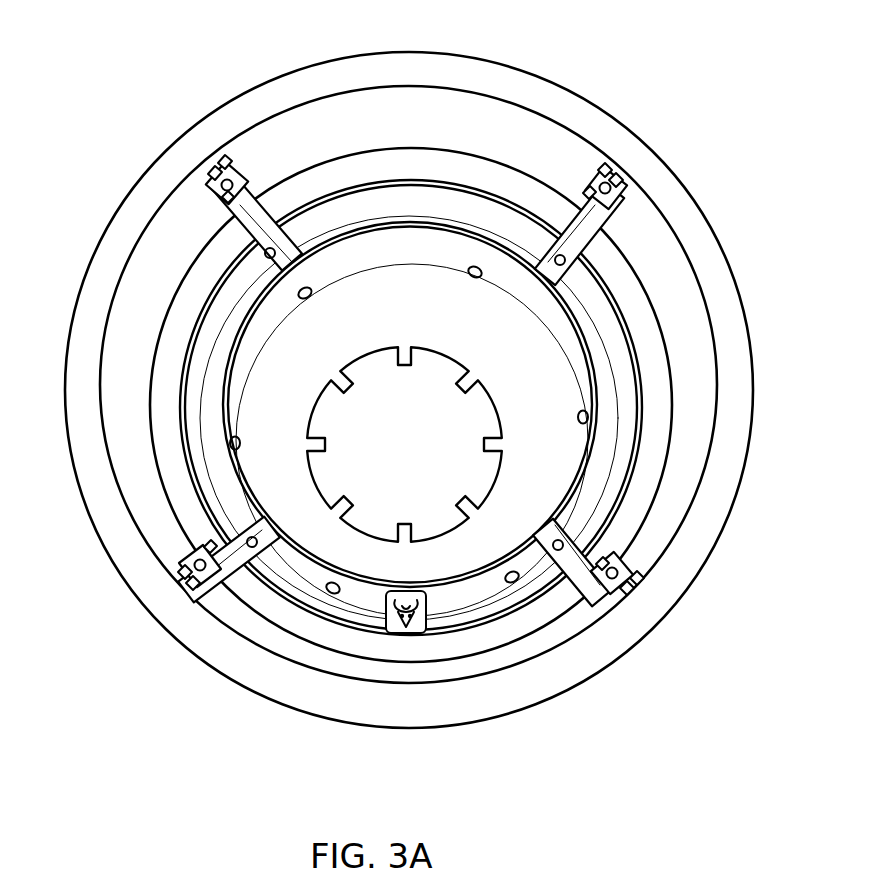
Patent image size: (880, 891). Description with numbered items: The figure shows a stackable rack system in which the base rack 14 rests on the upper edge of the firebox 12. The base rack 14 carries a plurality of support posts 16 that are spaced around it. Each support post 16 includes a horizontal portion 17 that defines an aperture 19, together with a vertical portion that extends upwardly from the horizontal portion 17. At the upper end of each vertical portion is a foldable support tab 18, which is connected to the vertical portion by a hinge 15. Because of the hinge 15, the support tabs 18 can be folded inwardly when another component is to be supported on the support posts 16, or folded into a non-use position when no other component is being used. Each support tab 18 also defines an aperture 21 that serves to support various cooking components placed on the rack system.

The firebox 12 is at (418, 330).
The base rack 14 is at (625, 318).
The hinge 15 is at (222, 226).
The support post 16 is at (620, 212).
The horizontal portion 17 is at (262, 206).
The foldable support tab 18 is at (240, 176).
The aperture 19 is at (313, 293).
The aperture 21 is at (210, 183).